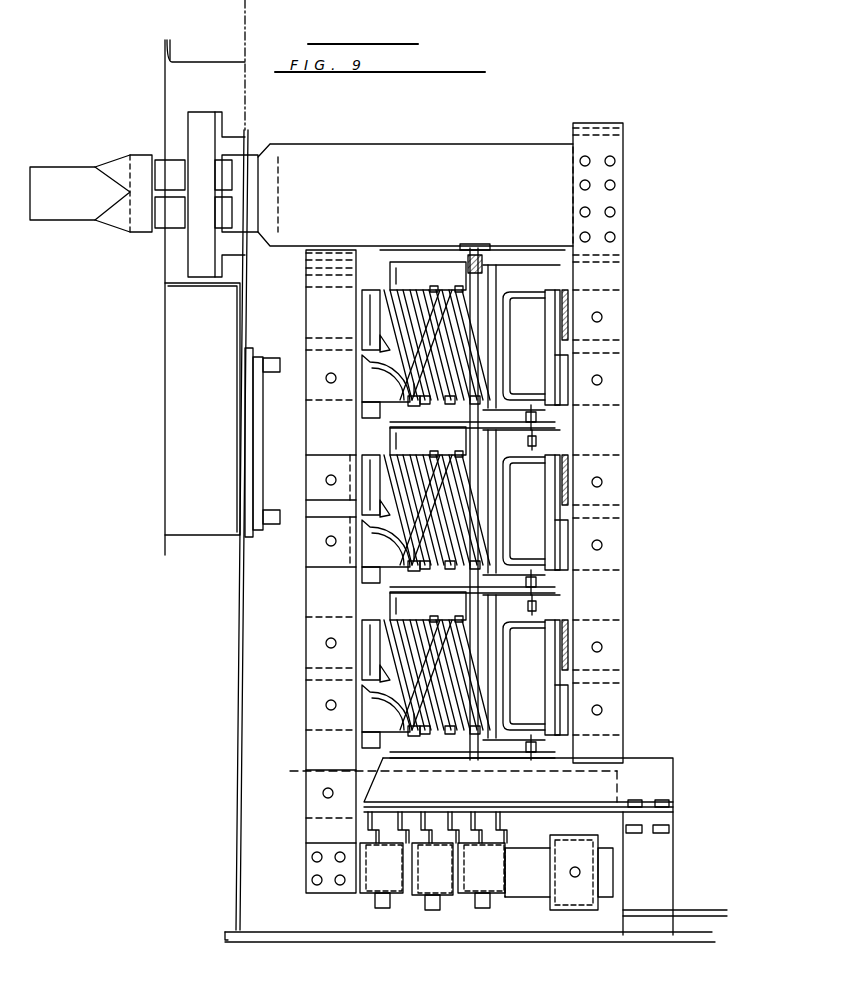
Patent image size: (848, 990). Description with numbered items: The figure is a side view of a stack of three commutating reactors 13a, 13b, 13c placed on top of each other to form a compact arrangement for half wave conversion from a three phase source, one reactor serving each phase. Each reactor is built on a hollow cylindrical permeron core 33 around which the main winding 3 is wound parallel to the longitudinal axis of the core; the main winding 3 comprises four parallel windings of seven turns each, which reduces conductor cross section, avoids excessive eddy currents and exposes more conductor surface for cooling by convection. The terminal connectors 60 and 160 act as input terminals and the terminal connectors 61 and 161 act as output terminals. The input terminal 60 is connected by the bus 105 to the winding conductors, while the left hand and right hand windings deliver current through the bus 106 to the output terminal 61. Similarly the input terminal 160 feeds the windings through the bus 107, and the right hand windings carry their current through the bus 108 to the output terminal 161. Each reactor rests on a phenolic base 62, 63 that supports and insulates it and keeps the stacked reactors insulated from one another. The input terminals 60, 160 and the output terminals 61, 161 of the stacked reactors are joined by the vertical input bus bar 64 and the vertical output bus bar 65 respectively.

The main winding 3 is at (432, 298).
The commutating reactor 13a is at (630, 710).
The commutating reactor 13b is at (630, 525).
The commutating reactor 13c is at (520, 509).
The core 33 is at (415, 400).
The input terminal connector 60 is at (320, 389).
The output terminal connector 61 is at (322, 318).
The phenolic base 62 is at (532, 418).
The phenolic base 63 is at (534, 443).
The vertical input bus bar 64 is at (625, 660).
The vertical output bus bar 65 is at (320, 598).
The bus 105 is at (376, 402).
The bus 106 is at (373, 292).
The bus 107 is at (566, 364).
The bus 108 is at (566, 290).
The input terminal connector 160 is at (622, 388).
The output terminal connector 161 is at (624, 306).